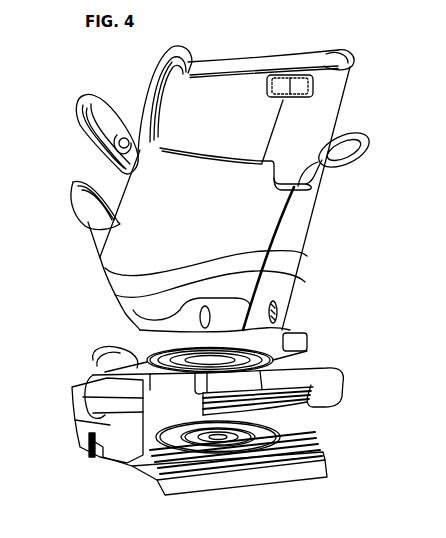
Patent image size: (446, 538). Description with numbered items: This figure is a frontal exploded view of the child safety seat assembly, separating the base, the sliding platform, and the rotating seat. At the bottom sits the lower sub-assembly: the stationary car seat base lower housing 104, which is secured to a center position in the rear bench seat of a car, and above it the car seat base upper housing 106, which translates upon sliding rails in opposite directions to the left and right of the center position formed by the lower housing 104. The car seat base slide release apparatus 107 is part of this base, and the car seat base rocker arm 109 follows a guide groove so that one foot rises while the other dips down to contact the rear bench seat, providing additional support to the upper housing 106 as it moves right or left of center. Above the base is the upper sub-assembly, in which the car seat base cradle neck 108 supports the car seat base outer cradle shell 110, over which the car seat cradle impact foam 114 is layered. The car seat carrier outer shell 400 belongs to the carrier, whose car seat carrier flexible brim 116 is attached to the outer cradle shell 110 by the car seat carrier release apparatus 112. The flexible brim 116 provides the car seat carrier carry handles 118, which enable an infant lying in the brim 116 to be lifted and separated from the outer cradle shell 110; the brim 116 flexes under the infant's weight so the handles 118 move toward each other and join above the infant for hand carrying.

The car seat base lower housing 104 is at (148, 482).
The car seat base upper housing 106 is at (195, 384).
The car seat base slide release apparatus 107 is at (293, 342).
The car seat base cradle neck 108 is at (223, 307).
The car seat base rocker arm 109 is at (103, 433).
The car seat base outer cradle shell 110 is at (227, 237).
The car seat carrier release apparatus 112 is at (305, 84).
The car seat cradle impact foam 114 is at (297, 184).
The car seat carrier flexible brim 116 is at (178, 58).
The car seat carrier carry handles 118 is at (124, 143).
The car seat carrier outer shell 400 is at (307, 124).